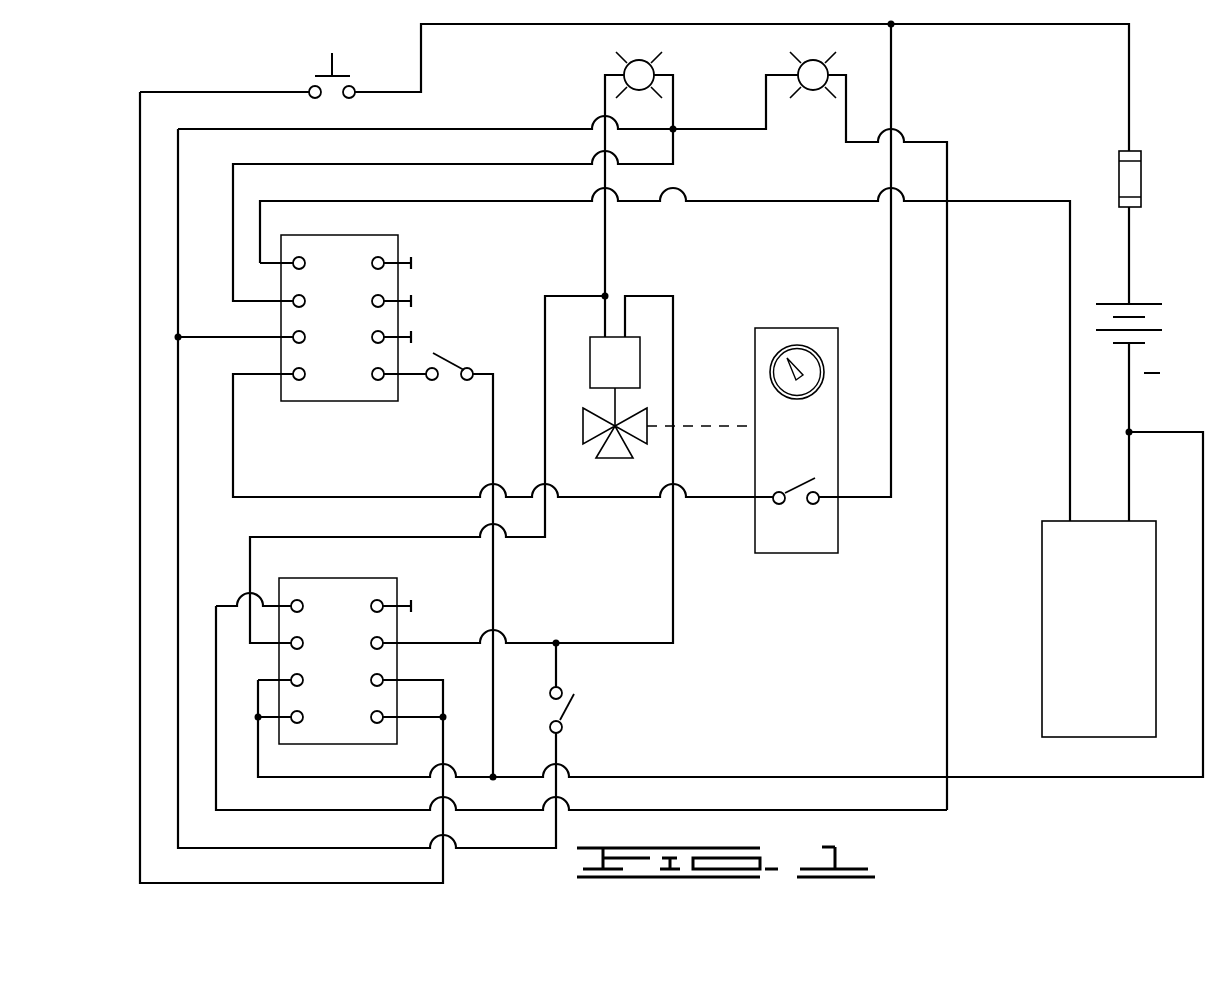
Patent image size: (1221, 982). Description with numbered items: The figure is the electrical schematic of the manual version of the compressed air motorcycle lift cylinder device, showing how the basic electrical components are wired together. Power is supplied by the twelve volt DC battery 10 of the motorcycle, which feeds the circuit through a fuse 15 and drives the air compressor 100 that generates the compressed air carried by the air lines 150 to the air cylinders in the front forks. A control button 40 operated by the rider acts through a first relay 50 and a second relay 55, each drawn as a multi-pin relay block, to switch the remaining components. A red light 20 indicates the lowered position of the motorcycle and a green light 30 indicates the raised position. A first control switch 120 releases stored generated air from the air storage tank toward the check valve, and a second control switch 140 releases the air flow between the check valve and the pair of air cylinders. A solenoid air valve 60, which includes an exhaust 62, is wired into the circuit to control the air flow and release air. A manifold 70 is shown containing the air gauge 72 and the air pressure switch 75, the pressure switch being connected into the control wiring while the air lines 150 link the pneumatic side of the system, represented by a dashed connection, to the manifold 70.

The battery 10 is at (1158, 330).
The fuse 15 is at (1138, 173).
The red light 20 is at (797, 64).
The green light 30 is at (622, 64).
The control button 40 is at (331, 58).
The first relay 50 is at (340, 401).
The second relay 55 is at (390, 578).
The solenoid air valve 60 is at (629, 372).
The exhaust 62 is at (615, 458).
The manifold 70 is at (810, 553).
The air gauge 72 is at (798, 347).
The air pressure switch 75 is at (793, 484).
The air compressor 100 is at (1113, 647).
The first control switch 120 is at (448, 362).
The second control switch 140 is at (576, 703).
The air lines 150 is at (719, 424).